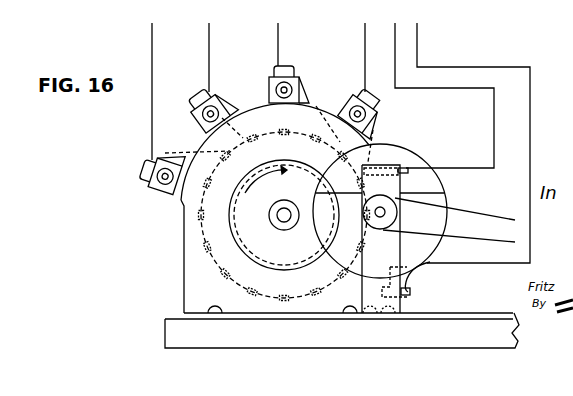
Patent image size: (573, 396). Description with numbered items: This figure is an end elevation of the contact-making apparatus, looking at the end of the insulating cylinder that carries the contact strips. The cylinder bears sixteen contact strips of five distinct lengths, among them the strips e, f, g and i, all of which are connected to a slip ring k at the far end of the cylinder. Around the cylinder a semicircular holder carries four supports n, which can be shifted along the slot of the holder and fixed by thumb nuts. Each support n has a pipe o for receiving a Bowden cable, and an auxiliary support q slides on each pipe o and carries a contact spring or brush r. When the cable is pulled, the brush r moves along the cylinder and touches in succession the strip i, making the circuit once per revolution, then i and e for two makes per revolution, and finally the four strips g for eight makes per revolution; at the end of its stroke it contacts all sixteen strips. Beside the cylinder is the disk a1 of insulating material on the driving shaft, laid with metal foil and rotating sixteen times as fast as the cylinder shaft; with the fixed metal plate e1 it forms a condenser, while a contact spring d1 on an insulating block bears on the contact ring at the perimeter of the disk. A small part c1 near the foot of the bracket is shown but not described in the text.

The support n is at (281, 78).
The pipe o is at (276, 88).
The auxiliary support q is at (292, 75).
The contact spring r is at (310, 95).
The contact strip e is at (200, 216).
The contact strip f is at (210, 251).
The contact strip g is at (230, 273).
The slip ring k is at (250, 290).
The contact strip i is at (363, 215).
The fixed metal plate e1 is at (396, 160).
The condenser disk a1 is at (430, 245).
The contact spring d1 is at (412, 283).
The stop block c1 is at (410, 292).